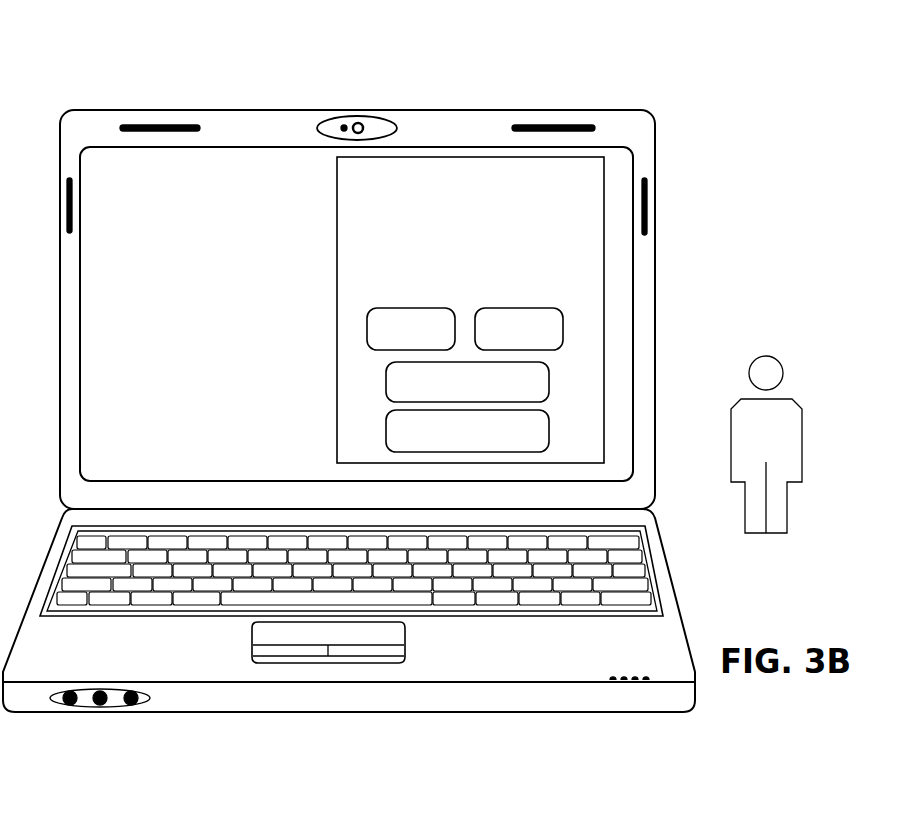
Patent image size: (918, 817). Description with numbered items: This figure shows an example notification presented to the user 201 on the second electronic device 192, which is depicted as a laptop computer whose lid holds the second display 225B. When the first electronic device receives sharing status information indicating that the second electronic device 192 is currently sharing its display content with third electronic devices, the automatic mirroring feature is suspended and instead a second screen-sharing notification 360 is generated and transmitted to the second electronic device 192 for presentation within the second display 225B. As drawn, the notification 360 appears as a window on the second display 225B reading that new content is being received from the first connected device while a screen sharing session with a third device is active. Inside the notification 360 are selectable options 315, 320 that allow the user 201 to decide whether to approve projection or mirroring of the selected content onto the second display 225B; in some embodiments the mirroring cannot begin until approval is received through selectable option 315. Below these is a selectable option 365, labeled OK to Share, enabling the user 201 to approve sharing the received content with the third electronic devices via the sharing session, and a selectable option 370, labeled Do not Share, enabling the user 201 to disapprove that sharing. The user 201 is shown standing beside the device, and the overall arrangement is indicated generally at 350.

The computing device 350 is at (157, 64).
The display 225B is at (292, 147).
The camera 192 is at (550, 110).
The notification window 360 is at (604, 215).
The first connected device selector 315 is at (411, 329).
The third device selector 320 is at (519, 329).
The OK to Share button 365 is at (550, 378).
The Do not Share button 370 is at (552, 427).
The user 201 is at (766, 444).